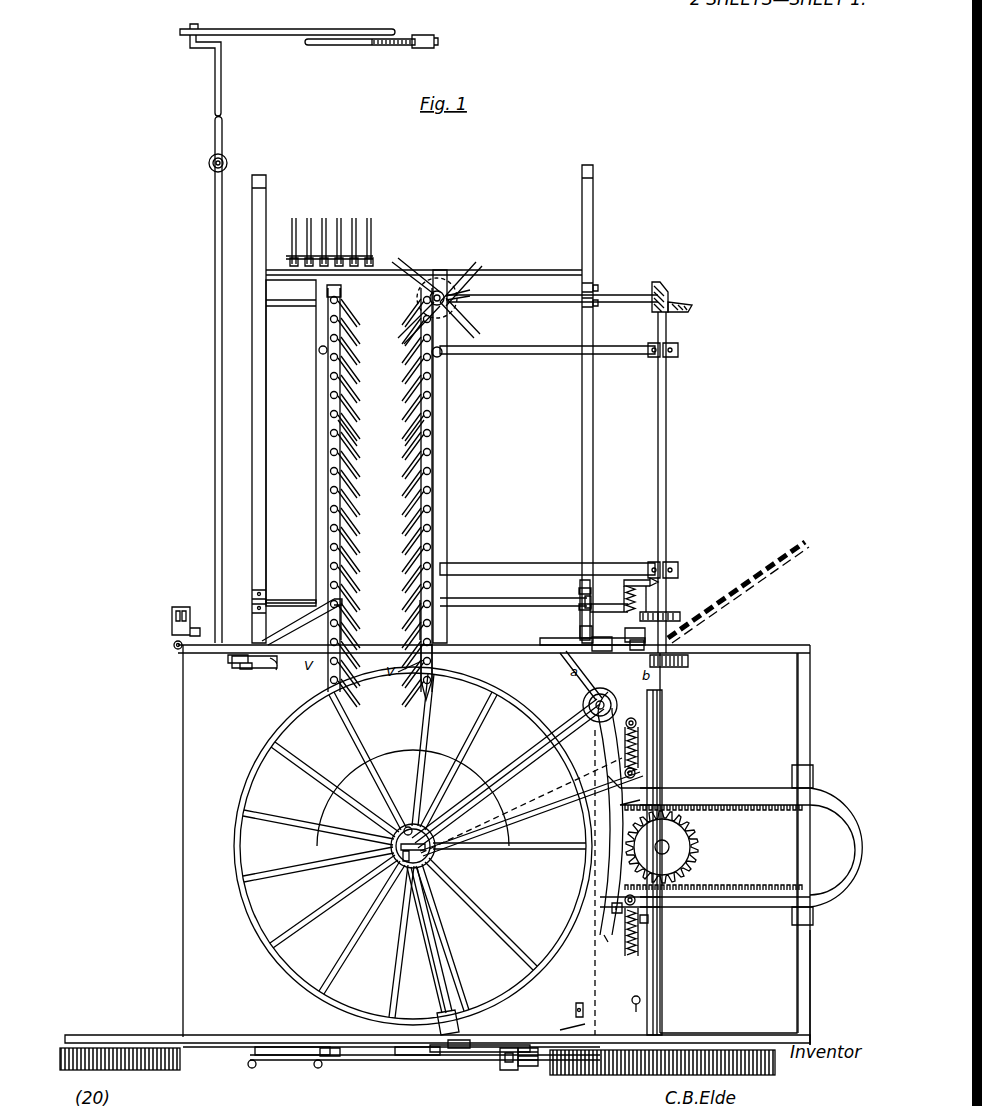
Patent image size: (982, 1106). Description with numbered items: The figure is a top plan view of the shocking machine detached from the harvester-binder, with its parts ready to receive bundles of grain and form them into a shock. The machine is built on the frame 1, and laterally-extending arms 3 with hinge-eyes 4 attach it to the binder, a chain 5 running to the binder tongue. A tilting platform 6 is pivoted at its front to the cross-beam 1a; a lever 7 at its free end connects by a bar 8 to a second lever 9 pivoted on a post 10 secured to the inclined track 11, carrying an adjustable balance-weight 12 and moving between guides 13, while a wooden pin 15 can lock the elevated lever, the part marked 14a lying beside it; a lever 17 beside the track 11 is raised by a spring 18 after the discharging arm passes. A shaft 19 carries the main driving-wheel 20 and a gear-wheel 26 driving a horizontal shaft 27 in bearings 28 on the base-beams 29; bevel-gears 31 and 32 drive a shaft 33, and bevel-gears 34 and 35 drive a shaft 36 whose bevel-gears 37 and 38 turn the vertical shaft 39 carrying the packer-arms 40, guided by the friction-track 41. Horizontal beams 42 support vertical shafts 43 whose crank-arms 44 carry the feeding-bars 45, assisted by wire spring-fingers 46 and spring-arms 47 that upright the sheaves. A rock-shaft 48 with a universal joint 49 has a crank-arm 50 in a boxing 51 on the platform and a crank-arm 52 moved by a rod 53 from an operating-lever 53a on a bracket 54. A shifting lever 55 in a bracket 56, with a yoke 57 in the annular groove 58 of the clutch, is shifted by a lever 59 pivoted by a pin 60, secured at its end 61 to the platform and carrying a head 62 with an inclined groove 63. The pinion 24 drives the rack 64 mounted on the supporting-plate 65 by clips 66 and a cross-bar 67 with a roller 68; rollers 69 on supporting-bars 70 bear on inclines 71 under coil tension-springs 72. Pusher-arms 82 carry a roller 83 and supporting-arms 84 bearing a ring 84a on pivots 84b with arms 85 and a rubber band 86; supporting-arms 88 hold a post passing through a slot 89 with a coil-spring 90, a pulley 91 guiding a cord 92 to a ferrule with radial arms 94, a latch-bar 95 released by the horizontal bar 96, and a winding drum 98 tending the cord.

The frame 1 is at (182, 627).
The cross-beam 1a is at (596, 828).
The laterally-extending arms 3 is at (266, 447).
The hinge-eyes 4 is at (266, 180).
The chain 5 is at (738, 592).
The tilting platform 6 is at (183, 858).
The lever 7 is at (248, 1047).
The bar 8 is at (285, 1050).
The second lever 9 is at (366, 1064).
The pivot post or bracket 10 is at (320, 1062).
The inclined track 11 is at (332, 1050).
The balance-weight 12 is at (509, 1072).
The guides 13 is at (532, 1068).
The clip 14a is at (567, 1005).
The wooden pin 15 is at (564, 1026).
The lever 17 is at (474, 1055).
The spring 18 is at (486, 1040).
The shaft 19 is at (662, 975).
The main driving-wheel 20 is at (647, 1072).
The gear wheel or pinion 24 is at (700, 852).
The second gear-wheel 26 is at (723, 843).
The horizontal shaft 27 is at (667, 536).
The bearings 28 is at (680, 352).
The base-beams 29 is at (560, 352).
The bevel-gear 31 is at (680, 617).
The bevel-gear 32 is at (652, 585).
The horizontal shaft 33 is at (515, 592).
The bevel-gear 34 is at (682, 310).
The bevel-gear 35 is at (676, 262).
The shaft 36 is at (566, 302).
The bevel-gear 37 is at (475, 298).
The bevel-gear 38 is at (468, 287).
The vertical shaft 39 is at (424, 306).
The packer-arms 40 is at (430, 268).
The stationary circular friction-track 41 is at (428, 300).
The horizontal beams 42 is at (447, 478).
The vertical shafts 43 is at (268, 352).
The crank-arms 44 is at (340, 378).
The feeding-bars 45 is at (404, 466).
The wire spring-fingers 46 is at (380, 595).
The spring-arms 47 is at (329, 231).
The rock-shaft 48 is at (215, 283).
The ball-and-socket or universal joint 49 is at (210, 170).
The crank-arm 50 is at (262, 674).
The boxing 51 is at (238, 666).
The crank-arm 52 is at (196, 75).
The rod 53 is at (287, 20).
The operating-lever 53a is at (360, 51).
The bracket 54 is at (418, 46).
The shifting lever 55 is at (609, 618).
The bracket 56 is at (584, 612).
The yoke 57 is at (636, 638).
The annular groove or recess 58 is at (648, 603).
The lever 59 is at (556, 648).
The pin 60 is at (577, 634).
The end 61 is at (571, 675).
The block or head 62 is at (637, 652).
The inclined groove or recess 63 is at (600, 652).
The rack 64 is at (731, 841).
The supporting-plate 65 is at (629, 1009).
The clips 66 is at (650, 908).
The cross-bar 67 is at (812, 970).
The roller 68 is at (813, 918).
The rollers 69 is at (636, 775).
The supporting-bars 70 is at (690, 788).
The inclines 71 is at (858, 935).
The coil tension-springs 72 is at (640, 740).
The pusher-arms 82 is at (508, 686).
The roller 83 is at (456, 1050).
The supporting-arms 84 is at (538, 806).
The ring 84a is at (410, 914).
The pivots 84b is at (432, 896).
The arms 85 is at (362, 927).
The elastic rubber band 86 is at (300, 952).
The supporting-arms 88 is at (452, 990).
The elongated slot 89 is at (462, 852).
The coil-spring 90 is at (372, 842).
The pulley 91 is at (360, 874).
The cord 92 is at (517, 776).
The radially-extending supporting-arms 94 is at (446, 937).
The vertical latch-bar 95 is at (395, 812).
The horizontal bar 96 is at (492, 716).
The spring-actuated winding drum or spool 98 is at (588, 700).